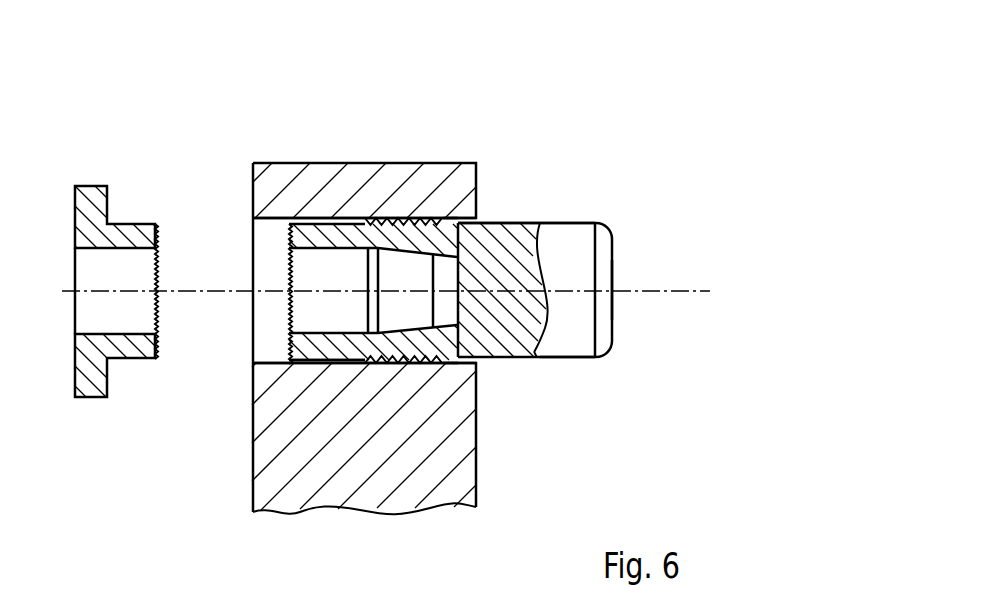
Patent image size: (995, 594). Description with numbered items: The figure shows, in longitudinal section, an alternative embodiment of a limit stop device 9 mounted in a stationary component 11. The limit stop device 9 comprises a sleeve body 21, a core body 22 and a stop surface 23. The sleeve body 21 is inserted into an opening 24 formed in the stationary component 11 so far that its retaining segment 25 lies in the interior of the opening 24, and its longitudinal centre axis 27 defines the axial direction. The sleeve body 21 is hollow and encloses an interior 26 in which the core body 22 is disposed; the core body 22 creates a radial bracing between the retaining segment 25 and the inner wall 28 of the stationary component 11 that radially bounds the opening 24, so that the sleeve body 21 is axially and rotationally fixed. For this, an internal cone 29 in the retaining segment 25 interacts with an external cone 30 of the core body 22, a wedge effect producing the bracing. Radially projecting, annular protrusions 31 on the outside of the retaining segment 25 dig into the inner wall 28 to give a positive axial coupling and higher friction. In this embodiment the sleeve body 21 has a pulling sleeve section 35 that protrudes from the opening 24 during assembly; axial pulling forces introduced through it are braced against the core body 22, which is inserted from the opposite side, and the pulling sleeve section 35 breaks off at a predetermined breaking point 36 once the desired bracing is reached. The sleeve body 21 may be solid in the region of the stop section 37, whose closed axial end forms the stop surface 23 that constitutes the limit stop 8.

The limit stop 8 is at (612, 248).
The limit stop device 9 is at (633, 140).
The stationary component 11 is at (322, 152).
The sleeve body 21 is at (569, 213).
The core body 22 is at (413, 236).
The stop surface 23 is at (615, 302).
The opening 24 is at (268, 323).
The retaining segment 25 is at (367, 365).
The interior 26 is at (452, 278).
The longitudinal centre axis 27 is at (700, 291).
The inner wall 28 is at (252, 228).
The internal cone 29 is at (434, 262).
The external cone 30 is at (395, 218).
The protrusion 31 is at (445, 364).
The pulling sleeve section 35 is at (92, 186).
The predetermined breaking point 36 is at (291, 226).
The stop section 37 is at (560, 357).